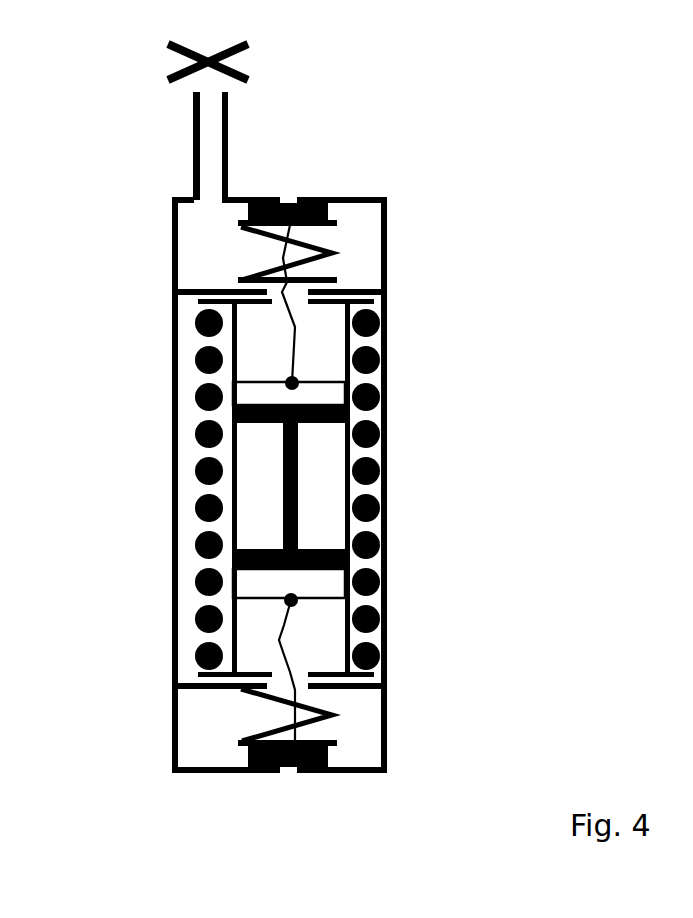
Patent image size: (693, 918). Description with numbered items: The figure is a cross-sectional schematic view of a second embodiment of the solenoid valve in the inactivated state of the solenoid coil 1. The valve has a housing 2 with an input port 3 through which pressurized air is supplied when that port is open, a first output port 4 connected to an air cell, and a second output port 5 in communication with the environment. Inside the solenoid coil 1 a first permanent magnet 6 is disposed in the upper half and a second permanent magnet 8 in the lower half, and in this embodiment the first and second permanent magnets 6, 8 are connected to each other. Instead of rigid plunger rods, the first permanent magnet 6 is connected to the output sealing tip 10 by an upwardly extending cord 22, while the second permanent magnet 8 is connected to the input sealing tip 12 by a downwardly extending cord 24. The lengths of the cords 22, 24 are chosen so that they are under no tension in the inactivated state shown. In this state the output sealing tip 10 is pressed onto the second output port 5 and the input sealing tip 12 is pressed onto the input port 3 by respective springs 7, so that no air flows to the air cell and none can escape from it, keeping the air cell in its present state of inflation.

The solenoid coil 1 is at (195, 327).
The housing 2 is at (387, 706).
The input port 3 is at (292, 775).
The first output port 4 is at (195, 93).
The second output port 5 is at (295, 197).
The first permanent magnet 6 is at (257, 378).
The spring 7 is at (333, 253).
The second permanent magnet 8 is at (255, 602).
The output sealing tip 10 is at (325, 213).
The input sealing tip 12 is at (330, 757).
The upwardly extending cord 22 is at (330, 252).
The downwardly extending cord 24 is at (290, 714).